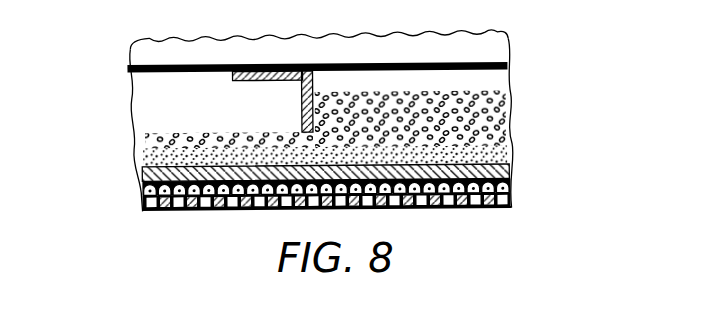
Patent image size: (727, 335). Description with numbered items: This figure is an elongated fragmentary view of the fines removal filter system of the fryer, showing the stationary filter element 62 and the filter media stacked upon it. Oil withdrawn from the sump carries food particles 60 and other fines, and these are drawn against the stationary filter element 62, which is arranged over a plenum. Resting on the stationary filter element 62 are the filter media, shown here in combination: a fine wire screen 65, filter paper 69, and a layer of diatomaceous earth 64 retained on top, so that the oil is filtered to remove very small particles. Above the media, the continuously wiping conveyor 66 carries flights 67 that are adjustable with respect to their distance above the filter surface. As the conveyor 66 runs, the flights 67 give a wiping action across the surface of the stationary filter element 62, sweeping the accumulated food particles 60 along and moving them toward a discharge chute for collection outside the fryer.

The continuously wiping conveyor 66 is at (455, 65).
The flights 67 is at (299, 94).
The food particles 60 is at (495, 124).
The layer of diatomaceous earth 64 is at (147, 157).
The filter paper 69 is at (507, 171).
The fine wire screen 65 is at (147, 188).
The stationary filter element 62 is at (509, 203).